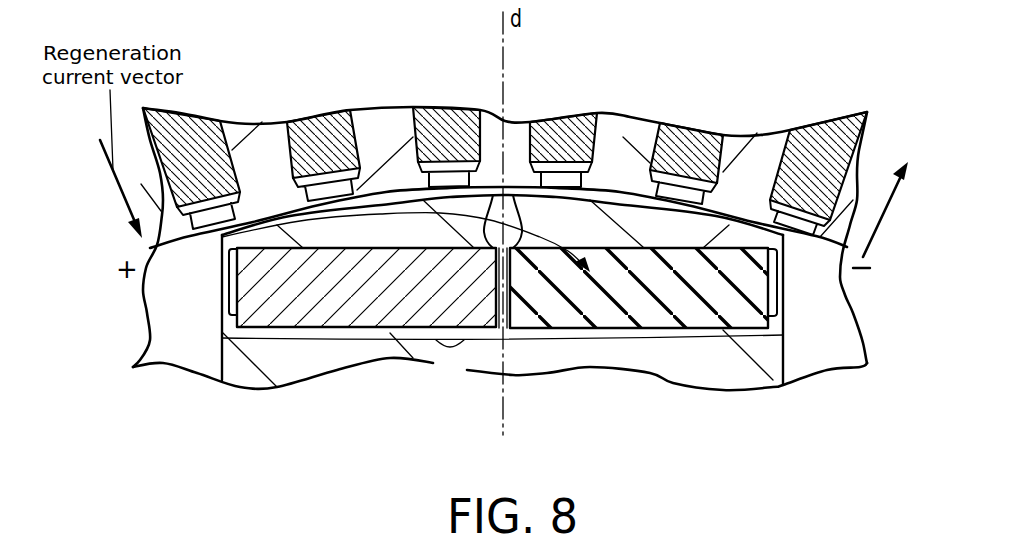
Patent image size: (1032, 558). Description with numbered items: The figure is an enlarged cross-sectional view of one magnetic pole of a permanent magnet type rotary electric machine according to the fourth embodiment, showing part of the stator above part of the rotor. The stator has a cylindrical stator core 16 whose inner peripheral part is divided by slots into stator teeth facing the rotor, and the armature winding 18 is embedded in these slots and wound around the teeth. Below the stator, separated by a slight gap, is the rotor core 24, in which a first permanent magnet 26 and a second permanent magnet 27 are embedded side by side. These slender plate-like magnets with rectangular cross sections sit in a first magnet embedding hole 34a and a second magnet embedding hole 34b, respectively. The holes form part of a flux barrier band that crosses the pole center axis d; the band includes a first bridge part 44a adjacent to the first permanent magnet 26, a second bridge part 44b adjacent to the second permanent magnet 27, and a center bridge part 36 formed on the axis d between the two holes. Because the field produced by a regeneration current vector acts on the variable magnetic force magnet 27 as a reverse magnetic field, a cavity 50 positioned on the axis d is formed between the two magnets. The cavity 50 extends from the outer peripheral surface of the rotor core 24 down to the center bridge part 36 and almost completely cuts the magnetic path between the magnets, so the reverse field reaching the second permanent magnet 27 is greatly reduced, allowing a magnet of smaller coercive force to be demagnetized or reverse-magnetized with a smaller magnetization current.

The stator core 16 is at (757, 167).
The armature winding 18 is at (451, 120).
The rotor core 24 is at (746, 368).
The first permanent magnet 26 is at (337, 310).
The second permanent magnet 27 is at (608, 312).
The first magnet embedding hole 34a is at (272, 320).
The second magnet embedding hole 34b is at (667, 327).
The center bridge part 36 is at (500, 332).
The first bridge part 44a is at (228, 279).
The second bridge part 44b is at (778, 289).
The cavity 50 is at (510, 213).